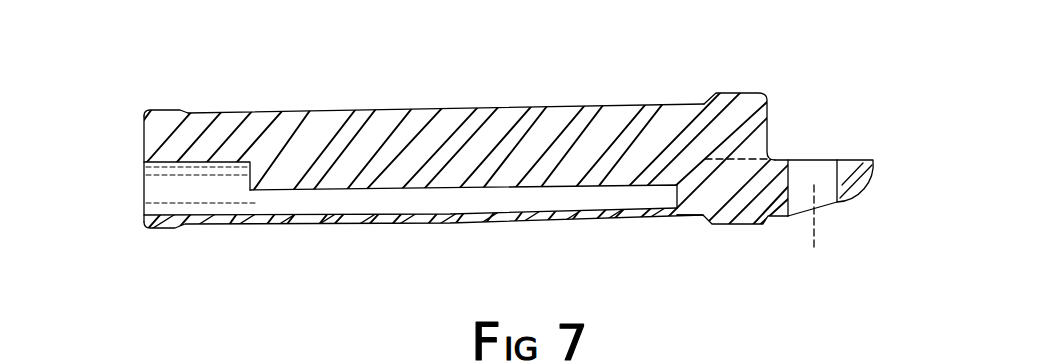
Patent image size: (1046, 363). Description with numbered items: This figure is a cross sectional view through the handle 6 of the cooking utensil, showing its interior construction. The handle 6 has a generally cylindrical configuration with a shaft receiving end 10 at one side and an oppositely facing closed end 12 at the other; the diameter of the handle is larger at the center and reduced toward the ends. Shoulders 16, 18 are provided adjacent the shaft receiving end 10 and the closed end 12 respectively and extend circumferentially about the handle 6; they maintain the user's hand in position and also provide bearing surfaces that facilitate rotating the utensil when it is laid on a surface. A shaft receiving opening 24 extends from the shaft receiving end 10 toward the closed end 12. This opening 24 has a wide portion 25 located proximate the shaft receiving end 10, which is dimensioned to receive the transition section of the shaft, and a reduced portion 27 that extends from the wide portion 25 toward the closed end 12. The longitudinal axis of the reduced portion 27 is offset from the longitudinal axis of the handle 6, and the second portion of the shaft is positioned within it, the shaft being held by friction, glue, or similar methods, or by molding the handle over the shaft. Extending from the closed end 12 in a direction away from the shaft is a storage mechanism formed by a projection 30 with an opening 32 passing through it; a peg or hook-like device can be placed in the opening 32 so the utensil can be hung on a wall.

The shaft receiving end 10 is at (142, 131).
The shoulder 16 is at (157, 112).
The handle 6 is at (598, 90).
The shoulder 18 is at (737, 92).
The closed end 12 is at (767, 115).
The projection 30 is at (870, 175).
The opening 32 is at (817, 193).
The shaft receiving opening 24 is at (245, 212).
The wide portion 25 is at (201, 187).
The reduced portion 27 is at (439, 198).